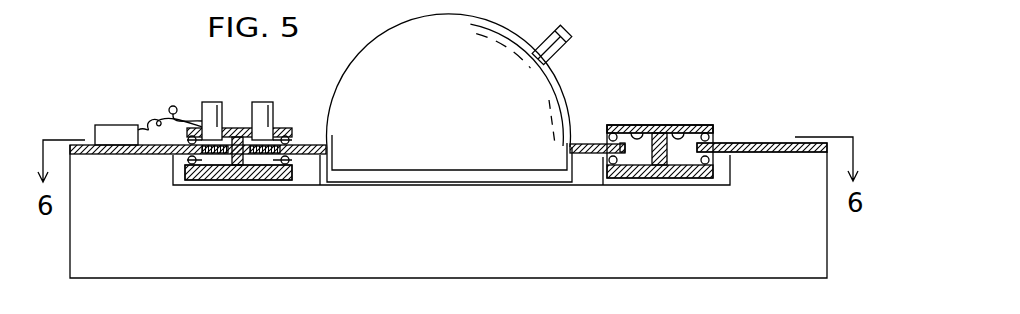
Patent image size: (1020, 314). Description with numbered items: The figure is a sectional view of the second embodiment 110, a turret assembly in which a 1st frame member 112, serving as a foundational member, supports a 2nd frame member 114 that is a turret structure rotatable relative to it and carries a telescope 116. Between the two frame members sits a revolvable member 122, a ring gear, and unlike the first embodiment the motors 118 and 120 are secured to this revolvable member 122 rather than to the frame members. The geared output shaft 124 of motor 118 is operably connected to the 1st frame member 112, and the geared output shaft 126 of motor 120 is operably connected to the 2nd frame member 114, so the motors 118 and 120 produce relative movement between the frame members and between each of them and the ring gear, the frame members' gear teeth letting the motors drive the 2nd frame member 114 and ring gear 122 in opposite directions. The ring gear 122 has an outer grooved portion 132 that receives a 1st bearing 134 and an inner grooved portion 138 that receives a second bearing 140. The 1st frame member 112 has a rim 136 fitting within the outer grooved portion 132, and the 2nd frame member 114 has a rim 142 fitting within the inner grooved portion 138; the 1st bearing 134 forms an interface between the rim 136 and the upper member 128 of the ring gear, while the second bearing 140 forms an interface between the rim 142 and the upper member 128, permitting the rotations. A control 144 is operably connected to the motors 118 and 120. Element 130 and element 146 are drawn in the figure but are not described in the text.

The second embodiment 110 is at (705, 80).
The 1st frame member 112 is at (737, 143).
The 2nd frame member 114 is at (352, 84).
The telescope 116 is at (567, 57).
The motor 118 is at (218, 101).
The motor 120 is at (263, 101).
The revolvable member 122 is at (643, 117).
The geared output shaft 124 is at (190, 147).
The geared output shaft 126 is at (262, 140).
The upper member 128 is at (236, 127).
The connector base 130 is at (204, 181).
The outer grooved portion 132 is at (160, 129).
The 1st bearing 134 is at (187, 162).
The rim 136 is at (93, 156).
The inner grooved portion 138 is at (292, 133).
The second bearing 140 is at (290, 158).
The rim 142 is at (312, 158).
The control 144 is at (97, 124).
The wire 146 is at (171, 107).